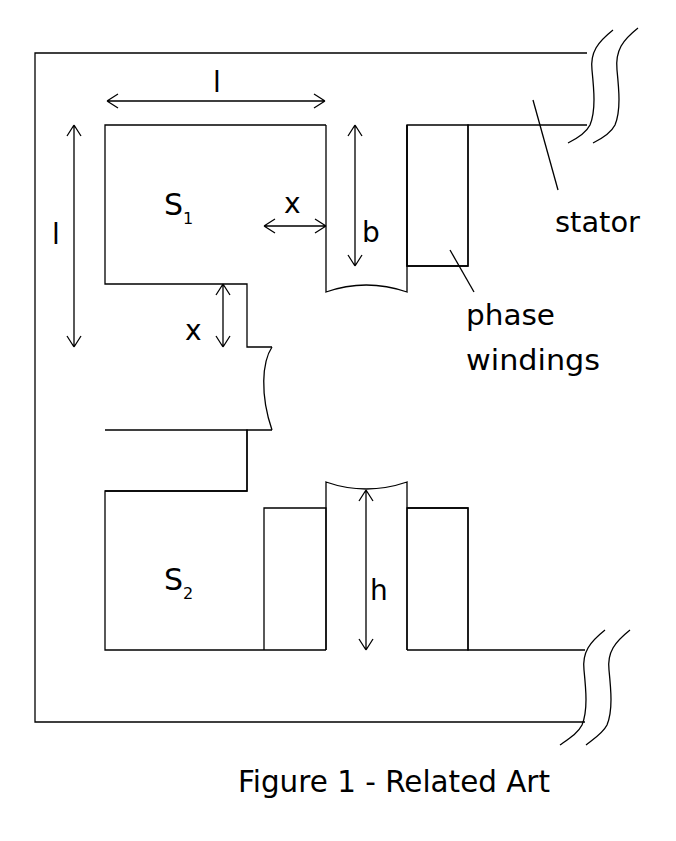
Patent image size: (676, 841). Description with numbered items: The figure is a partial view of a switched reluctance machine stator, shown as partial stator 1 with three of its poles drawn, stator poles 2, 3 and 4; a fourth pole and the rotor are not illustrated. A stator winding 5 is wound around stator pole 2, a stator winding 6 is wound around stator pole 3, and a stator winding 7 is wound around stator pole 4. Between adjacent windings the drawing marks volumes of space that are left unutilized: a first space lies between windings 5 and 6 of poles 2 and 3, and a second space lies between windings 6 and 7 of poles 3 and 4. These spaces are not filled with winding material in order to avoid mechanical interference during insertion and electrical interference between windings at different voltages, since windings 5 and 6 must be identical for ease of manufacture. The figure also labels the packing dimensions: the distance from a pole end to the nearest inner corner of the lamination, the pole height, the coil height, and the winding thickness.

The partial stator 1 is at (473, 53).
The stator pole 2 is at (345, 290).
The stator pole 3 is at (265, 378).
The stator pole 4 is at (357, 488).
The stator winding 5 is at (468, 245).
The stator winding 6 is at (128, 491).
The stator winding 7 is at (468, 548).